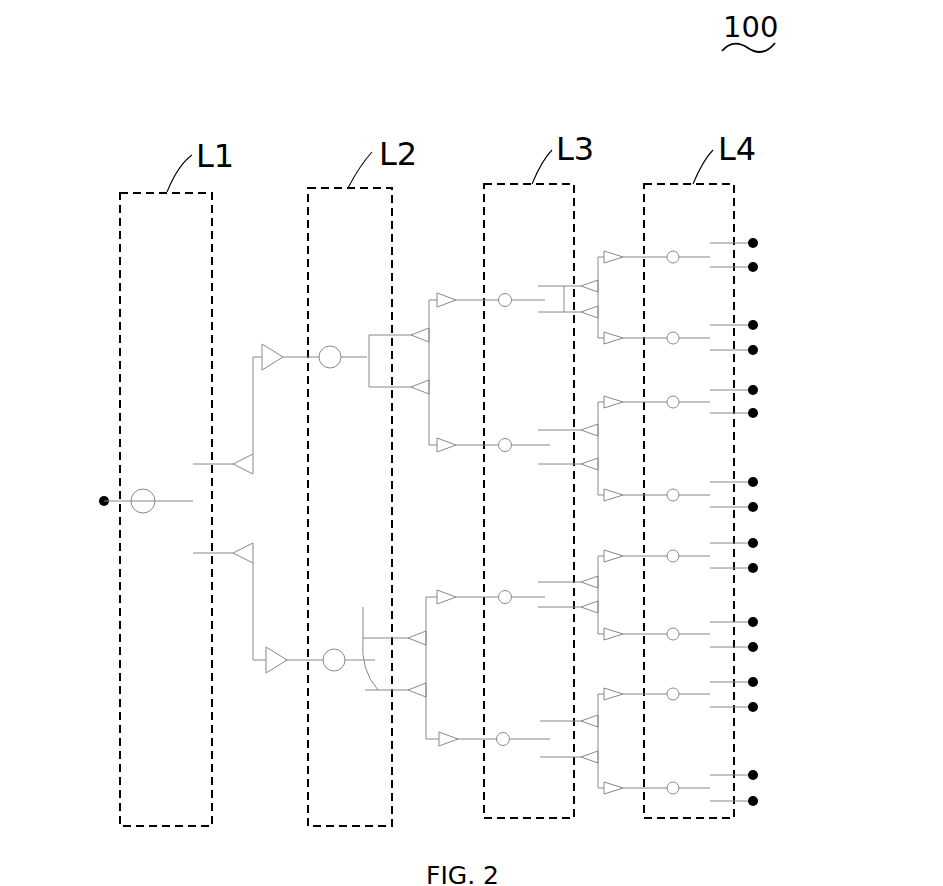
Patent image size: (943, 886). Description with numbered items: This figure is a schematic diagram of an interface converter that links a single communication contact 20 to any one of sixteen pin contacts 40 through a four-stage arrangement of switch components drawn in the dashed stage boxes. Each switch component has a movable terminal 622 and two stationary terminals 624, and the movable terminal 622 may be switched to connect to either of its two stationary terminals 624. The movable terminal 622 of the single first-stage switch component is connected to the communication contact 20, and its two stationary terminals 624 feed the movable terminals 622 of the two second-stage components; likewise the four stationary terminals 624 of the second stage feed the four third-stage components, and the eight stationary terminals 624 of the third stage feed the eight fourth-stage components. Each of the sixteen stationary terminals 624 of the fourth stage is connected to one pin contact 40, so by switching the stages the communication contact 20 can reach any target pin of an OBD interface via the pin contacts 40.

The communication contact 20 is at (102, 497).
The pin contact 40 is at (757, 262).
The movable terminal 622 is at (177, 501).
The stationary terminal 624 is at (228, 462).